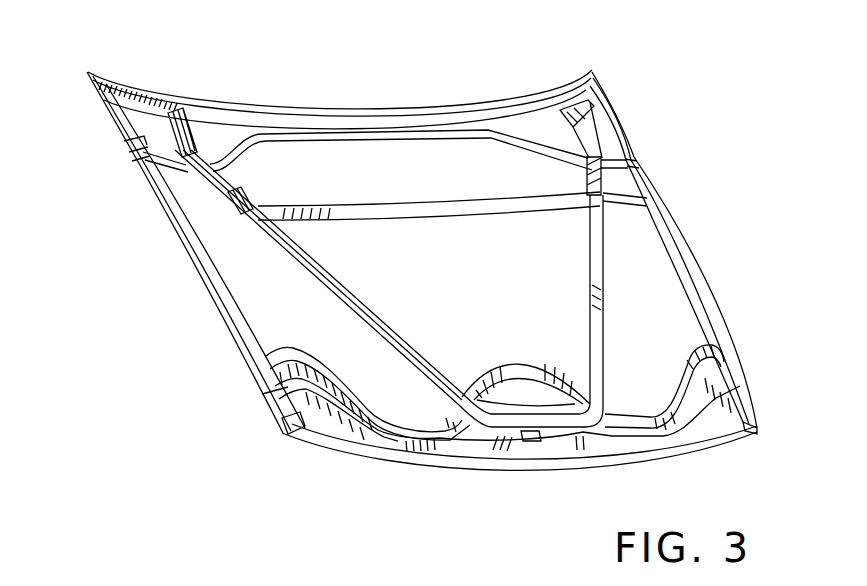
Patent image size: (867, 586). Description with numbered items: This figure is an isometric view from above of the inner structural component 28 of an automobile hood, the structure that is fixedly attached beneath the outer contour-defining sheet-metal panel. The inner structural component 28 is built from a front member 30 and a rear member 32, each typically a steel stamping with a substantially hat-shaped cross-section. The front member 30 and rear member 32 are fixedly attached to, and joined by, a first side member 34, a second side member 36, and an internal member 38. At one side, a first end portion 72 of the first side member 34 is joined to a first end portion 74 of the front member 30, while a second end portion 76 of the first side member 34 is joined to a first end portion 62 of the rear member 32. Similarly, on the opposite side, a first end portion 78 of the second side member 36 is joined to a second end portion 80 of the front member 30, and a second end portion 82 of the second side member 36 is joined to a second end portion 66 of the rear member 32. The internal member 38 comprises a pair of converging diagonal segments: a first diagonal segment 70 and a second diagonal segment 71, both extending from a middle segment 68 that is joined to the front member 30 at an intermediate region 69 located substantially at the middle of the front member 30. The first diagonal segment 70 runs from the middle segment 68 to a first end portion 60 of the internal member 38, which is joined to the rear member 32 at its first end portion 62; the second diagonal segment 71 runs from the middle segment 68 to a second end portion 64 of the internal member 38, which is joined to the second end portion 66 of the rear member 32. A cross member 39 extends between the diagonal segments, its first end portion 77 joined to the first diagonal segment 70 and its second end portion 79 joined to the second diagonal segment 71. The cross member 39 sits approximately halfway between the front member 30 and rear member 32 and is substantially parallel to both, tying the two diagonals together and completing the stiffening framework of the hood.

The inner structural component 28 is at (372, 80).
The front member 30 is at (375, 443).
The rear member 32 is at (271, 108).
The first side member 34 is at (214, 294).
The second side member 36 is at (690, 250).
The internal member 38 is at (385, 279).
The cross member 39 is at (417, 205).
The first end portion of internal member 60 is at (223, 168).
The first end portion of rear member 62 is at (125, 140).
The second end portion of internal member 64 is at (585, 172).
The second end portion of rear member 66 is at (618, 113).
The middle segment of internal member 68 is at (521, 405).
The intermediate region of front member 69 is at (583, 472).
The first diagonal segment 70 is at (330, 265).
The second diagonal segment 71 is at (588, 253).
The first end portion of first side member 72 is at (272, 393).
The first end portion of front member 74 is at (284, 436).
The second end portion of first side member 76 is at (133, 152).
The first end portion of cross member 77 is at (278, 212).
The first end portion of second side member 78 is at (760, 412).
The second end portion of cross member 79 is at (610, 197).
The second end portion of front member 80 is at (742, 443).
The second end portion of second side member 82 is at (652, 178).